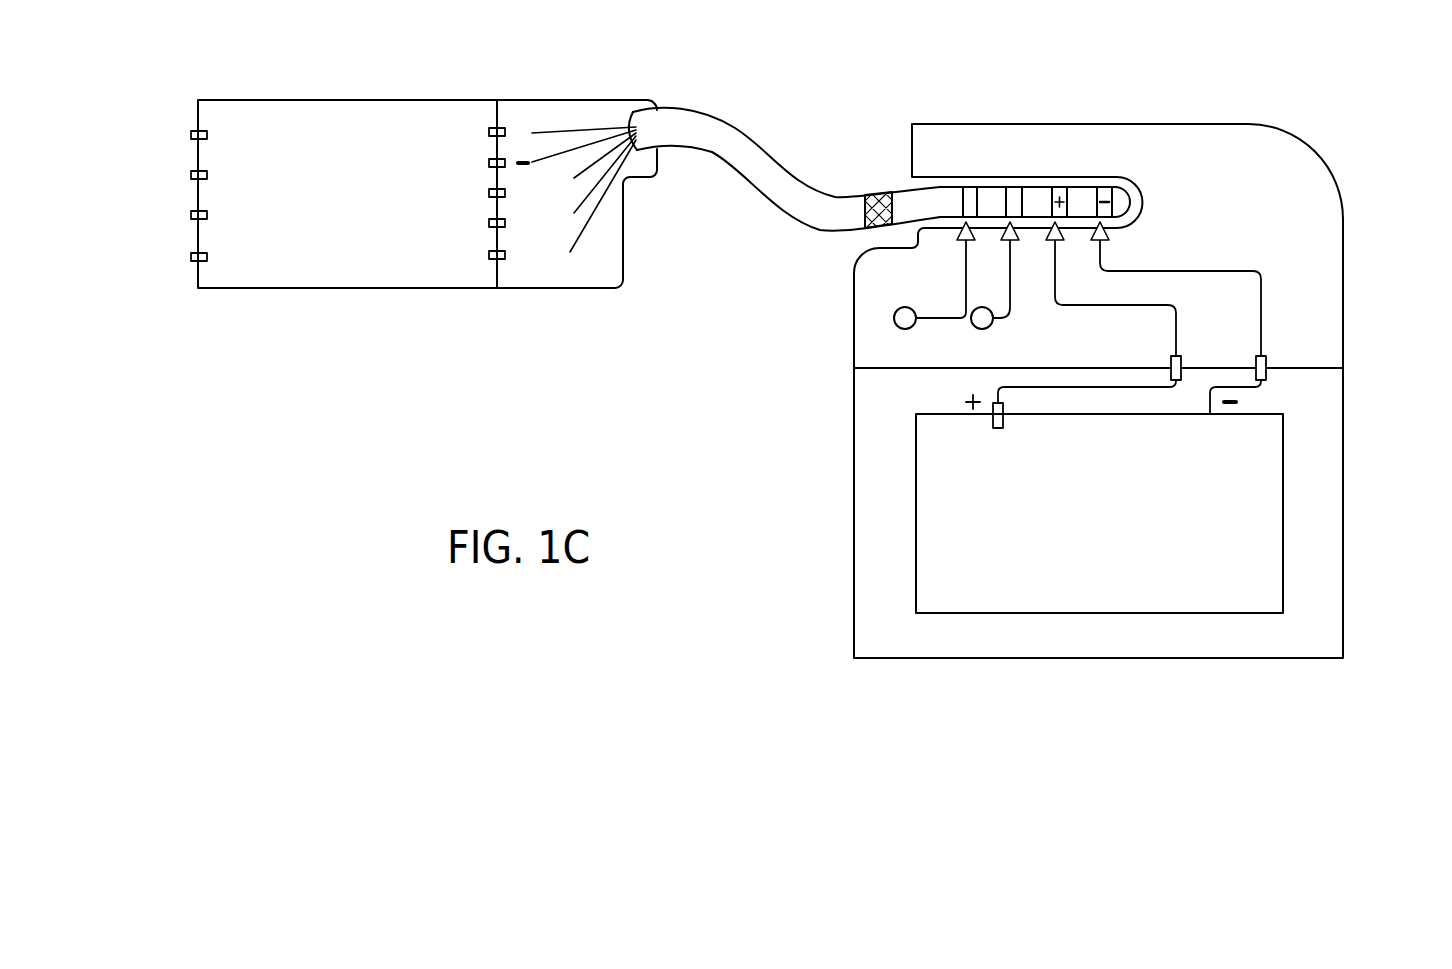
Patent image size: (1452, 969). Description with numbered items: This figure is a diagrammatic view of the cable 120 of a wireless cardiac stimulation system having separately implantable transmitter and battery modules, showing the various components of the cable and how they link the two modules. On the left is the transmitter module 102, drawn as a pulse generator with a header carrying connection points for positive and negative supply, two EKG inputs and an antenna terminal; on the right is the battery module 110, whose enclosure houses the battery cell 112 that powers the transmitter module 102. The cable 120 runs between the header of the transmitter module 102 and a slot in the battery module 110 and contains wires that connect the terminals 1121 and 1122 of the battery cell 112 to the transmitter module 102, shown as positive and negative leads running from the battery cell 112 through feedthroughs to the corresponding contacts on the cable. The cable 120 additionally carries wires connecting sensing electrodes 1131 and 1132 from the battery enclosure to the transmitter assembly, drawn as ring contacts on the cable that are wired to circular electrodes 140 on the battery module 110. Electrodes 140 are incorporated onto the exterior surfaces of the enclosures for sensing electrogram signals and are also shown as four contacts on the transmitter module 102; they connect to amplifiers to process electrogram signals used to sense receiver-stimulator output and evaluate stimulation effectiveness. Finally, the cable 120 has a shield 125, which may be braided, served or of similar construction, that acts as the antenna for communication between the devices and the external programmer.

The transmitter module 102 is at (397, 290).
The battery module 110 is at (1360, 438).
The battery cell 112 is at (1128, 522).
The cable 120 is at (894, 145).
The shield 125 is at (680, 148).
The sensing electrodes 140 is at (163, 140).
The battery cell terminal 1121 is at (1106, 195).
The battery cell terminal 1122 is at (1058, 194).
The sensing electrode 1131 is at (1017, 194).
The sensing electrode 1132 is at (967, 194).